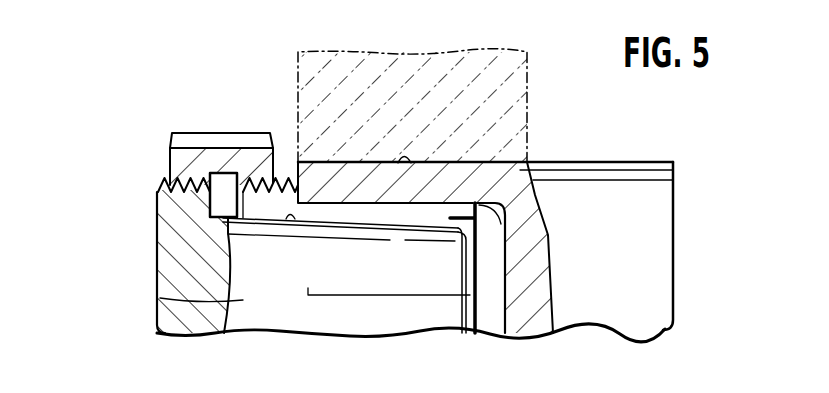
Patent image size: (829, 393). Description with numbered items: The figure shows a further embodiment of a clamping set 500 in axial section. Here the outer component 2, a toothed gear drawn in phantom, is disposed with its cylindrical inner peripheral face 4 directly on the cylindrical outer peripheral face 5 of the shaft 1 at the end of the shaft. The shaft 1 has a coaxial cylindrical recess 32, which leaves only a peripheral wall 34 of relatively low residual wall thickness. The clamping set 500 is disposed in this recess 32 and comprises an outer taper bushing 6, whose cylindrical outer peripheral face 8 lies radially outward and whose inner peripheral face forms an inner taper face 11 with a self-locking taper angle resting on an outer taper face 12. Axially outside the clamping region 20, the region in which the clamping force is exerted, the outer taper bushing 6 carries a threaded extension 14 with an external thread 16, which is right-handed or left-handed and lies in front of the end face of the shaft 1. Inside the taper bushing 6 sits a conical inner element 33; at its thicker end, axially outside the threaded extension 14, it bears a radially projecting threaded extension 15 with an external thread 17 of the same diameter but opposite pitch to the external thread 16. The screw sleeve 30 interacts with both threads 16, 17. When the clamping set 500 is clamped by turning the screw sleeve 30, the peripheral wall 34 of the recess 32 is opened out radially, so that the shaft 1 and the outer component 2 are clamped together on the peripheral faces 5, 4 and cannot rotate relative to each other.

The shaft 1 is at (662, 230).
The outer component 2 is at (520, 83).
The cylindrical inner peripheral face 4 is at (350, 163).
The cylindrical outer peripheral face 5 is at (397, 163).
The outer taper bushing 6 is at (433, 218).
The cylindrical outer peripheral face 8 is at (487, 220).
The inner taper face 11 is at (325, 220).
The outer taper face 12 is at (290, 219).
The threaded extension 14 is at (263, 203).
The threaded extension 15 is at (160, 223).
The external thread 16 is at (293, 187).
The external thread 17 is at (160, 188).
The clamping region 20 is at (385, 295).
The screw sleeve 30 is at (192, 135).
The cylindrical recess 32 is at (507, 225).
The conical inner element 33 is at (160, 298).
The peripheral wall 34 is at (378, 167).
The clamping set 500 is at (236, 122).